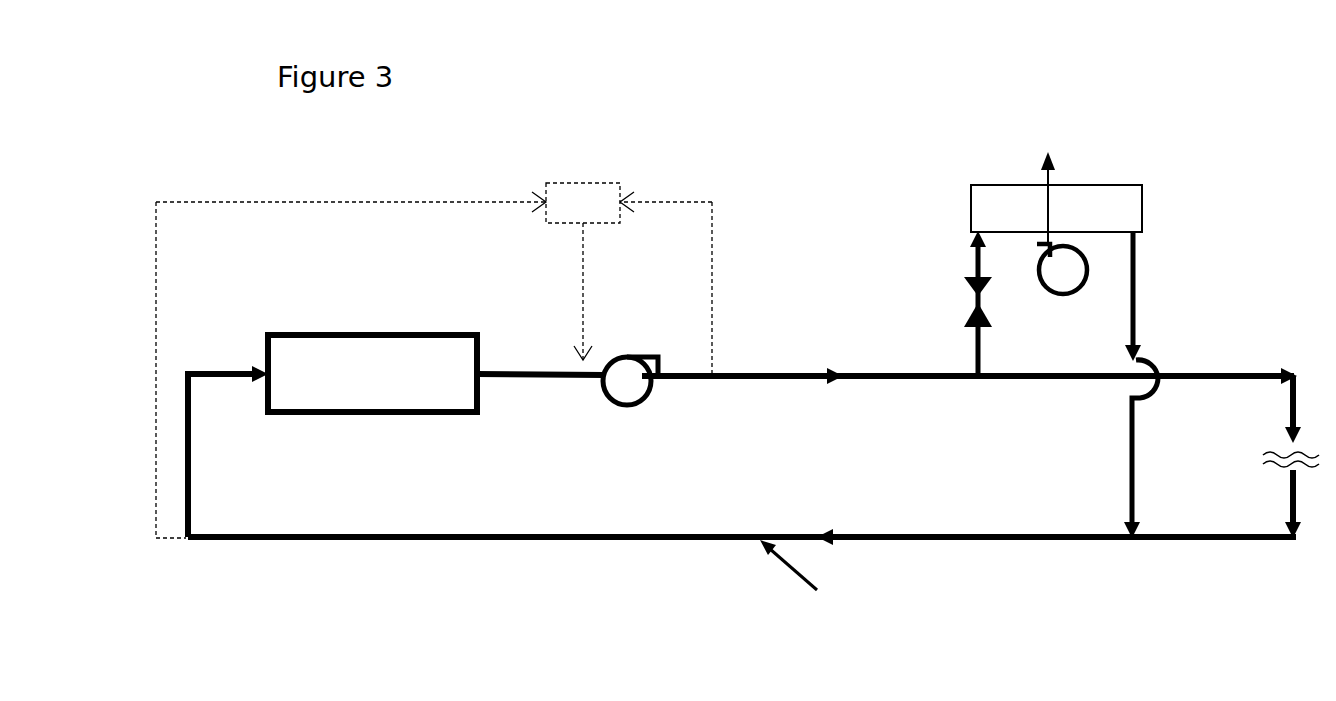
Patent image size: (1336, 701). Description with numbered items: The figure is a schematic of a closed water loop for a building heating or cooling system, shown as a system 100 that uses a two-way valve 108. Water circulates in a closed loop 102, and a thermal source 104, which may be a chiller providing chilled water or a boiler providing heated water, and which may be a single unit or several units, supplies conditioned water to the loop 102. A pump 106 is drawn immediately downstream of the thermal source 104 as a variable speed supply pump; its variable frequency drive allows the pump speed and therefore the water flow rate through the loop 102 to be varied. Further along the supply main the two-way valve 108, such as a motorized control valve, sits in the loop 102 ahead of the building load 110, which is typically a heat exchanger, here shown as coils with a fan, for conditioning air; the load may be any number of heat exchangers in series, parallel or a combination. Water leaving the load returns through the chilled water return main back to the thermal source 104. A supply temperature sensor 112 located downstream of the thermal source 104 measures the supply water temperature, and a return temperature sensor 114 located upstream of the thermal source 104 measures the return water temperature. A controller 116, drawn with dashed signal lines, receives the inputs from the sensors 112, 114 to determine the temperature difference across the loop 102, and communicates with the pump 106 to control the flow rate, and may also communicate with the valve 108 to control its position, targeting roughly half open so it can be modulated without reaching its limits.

The system 100 is at (1218, 262).
The closed loop 102 is at (355, 540).
The thermal source 104 is at (343, 333).
The pump 106 is at (660, 357).
The two-way valve 108 is at (962, 280).
The building load 110 is at (1142, 205).
The supply temperature sensor 112 is at (713, 378).
The return temperature sensor 114 is at (186, 540).
The controller 116 is at (434, 278).